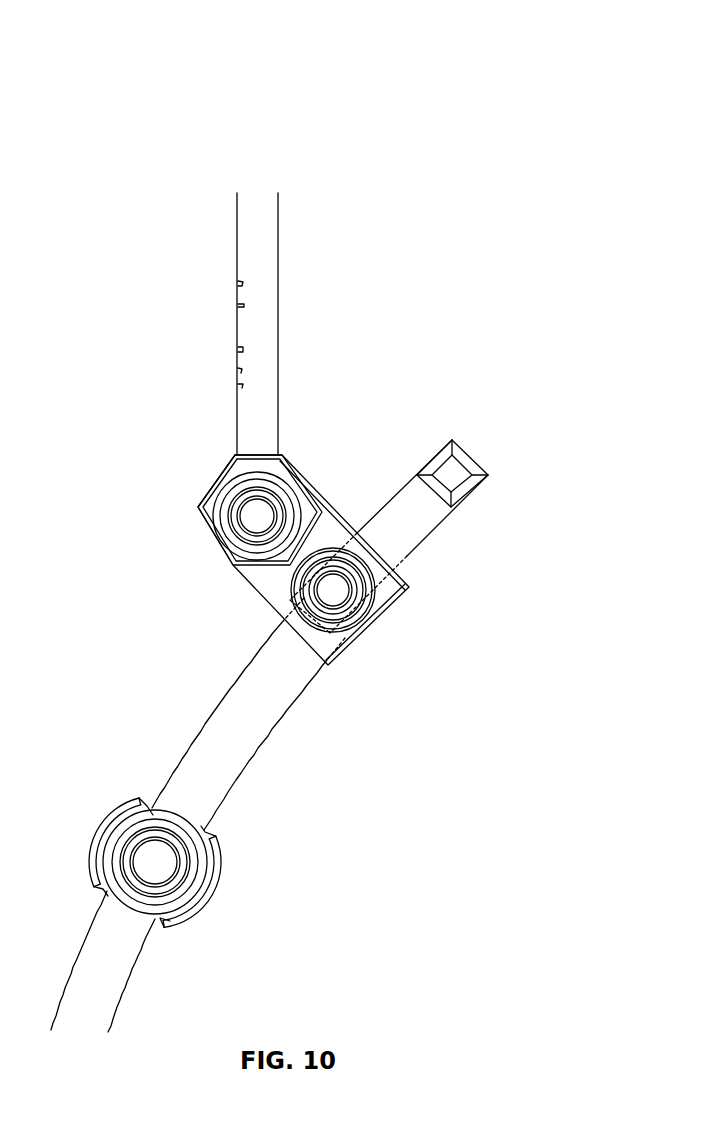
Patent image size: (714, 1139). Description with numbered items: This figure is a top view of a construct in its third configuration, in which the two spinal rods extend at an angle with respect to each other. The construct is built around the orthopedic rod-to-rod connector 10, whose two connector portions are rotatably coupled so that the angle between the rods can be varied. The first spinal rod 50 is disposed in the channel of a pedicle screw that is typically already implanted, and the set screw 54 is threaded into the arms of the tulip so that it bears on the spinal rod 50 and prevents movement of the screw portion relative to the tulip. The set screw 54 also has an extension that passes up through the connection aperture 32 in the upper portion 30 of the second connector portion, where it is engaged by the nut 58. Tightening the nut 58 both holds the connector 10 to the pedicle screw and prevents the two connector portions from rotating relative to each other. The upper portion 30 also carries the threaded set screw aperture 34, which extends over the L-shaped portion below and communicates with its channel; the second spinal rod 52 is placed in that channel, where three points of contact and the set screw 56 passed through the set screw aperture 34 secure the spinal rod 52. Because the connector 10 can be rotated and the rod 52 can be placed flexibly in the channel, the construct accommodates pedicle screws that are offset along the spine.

The orthopedic rod-to-rod connector 10 is at (536, 102).
The upper portion 30 is at (303, 560).
The connection aperture 32 is at (277, 493).
The set screw aperture 34 is at (343, 553).
The first spinal rod 50 is at (270, 423).
The second spinal rod 52 is at (226, 768).
The set screw 54 is at (257, 517).
The set screw 56 is at (323, 612).
The nut 58 is at (257, 465).